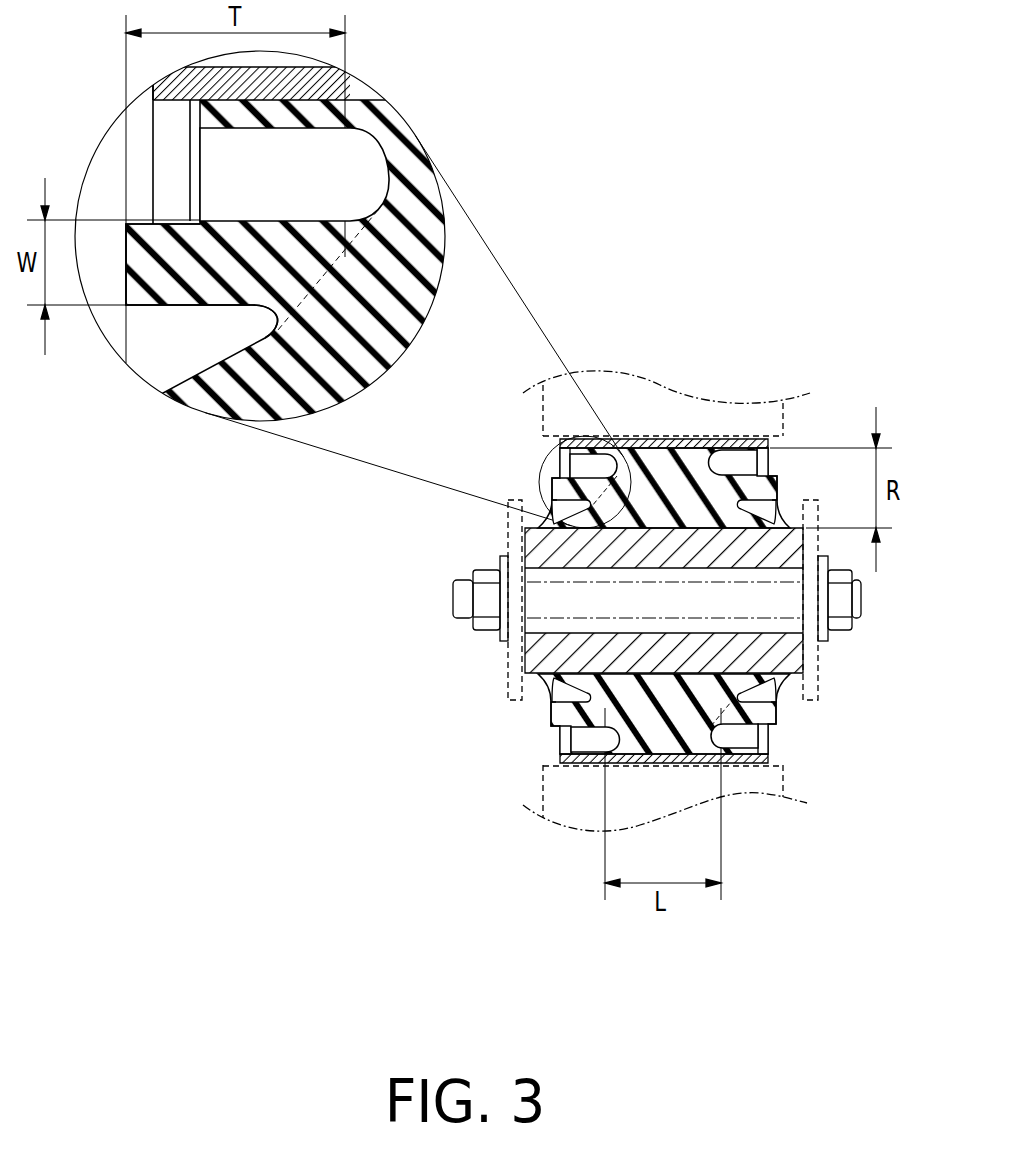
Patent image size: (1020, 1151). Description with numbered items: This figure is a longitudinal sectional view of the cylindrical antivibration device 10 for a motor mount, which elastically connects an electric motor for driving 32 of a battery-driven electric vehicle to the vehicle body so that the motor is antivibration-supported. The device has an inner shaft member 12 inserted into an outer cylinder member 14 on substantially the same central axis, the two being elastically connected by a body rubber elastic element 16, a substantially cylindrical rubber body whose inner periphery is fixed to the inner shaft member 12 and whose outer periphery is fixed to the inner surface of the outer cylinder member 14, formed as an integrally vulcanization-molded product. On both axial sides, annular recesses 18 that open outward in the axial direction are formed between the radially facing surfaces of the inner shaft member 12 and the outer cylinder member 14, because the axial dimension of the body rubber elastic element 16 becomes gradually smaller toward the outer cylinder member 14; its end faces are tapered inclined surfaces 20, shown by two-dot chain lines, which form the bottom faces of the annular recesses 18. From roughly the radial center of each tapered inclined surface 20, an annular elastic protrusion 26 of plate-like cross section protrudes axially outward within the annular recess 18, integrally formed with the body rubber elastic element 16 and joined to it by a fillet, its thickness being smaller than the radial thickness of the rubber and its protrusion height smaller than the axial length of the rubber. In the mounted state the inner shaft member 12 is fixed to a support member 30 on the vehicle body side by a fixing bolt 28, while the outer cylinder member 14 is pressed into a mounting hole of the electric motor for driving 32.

The cylindrical antivibration device for a motor mount 10 is at (840, 397).
The inner shaft member 12 is at (543, 655).
The outer cylinder member 14 is at (352, 90).
The body rubber elastic element 16 is at (370, 402).
The annular recess 18 is at (378, 190).
The tapered inclined surface 20 is at (243, 362).
The elastic protrusion 26 is at (198, 285).
The fixing bolt 28 is at (547, 605).
The support member 30 is at (813, 687).
The electric motor for driving 32 is at (557, 797).